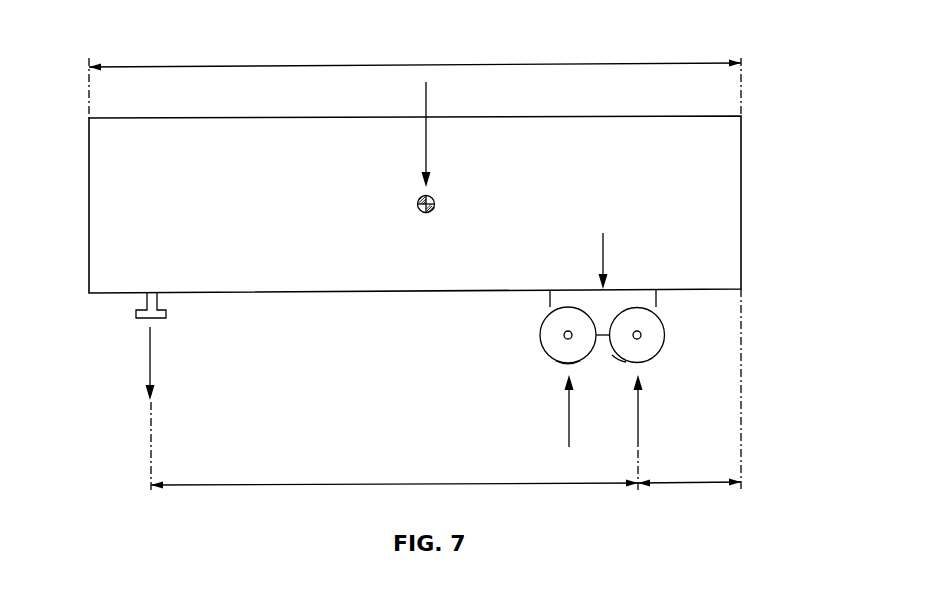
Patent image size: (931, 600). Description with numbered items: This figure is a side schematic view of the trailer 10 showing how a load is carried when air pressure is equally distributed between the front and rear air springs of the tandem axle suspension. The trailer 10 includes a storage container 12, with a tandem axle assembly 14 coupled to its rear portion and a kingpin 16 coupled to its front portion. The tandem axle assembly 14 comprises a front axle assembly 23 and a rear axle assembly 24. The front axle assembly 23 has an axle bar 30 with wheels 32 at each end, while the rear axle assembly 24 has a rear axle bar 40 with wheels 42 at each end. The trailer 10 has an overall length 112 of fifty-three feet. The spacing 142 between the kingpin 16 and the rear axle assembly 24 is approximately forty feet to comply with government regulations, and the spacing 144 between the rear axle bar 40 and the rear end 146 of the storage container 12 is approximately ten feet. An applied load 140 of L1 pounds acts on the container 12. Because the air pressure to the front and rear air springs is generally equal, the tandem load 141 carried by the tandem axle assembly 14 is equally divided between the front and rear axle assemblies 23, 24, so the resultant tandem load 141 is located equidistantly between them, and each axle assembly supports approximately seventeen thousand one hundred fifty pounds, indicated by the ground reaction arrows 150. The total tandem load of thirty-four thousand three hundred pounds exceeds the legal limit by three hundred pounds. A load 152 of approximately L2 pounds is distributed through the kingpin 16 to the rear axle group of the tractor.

The trailer 10 is at (88, 36).
The storage container 12 is at (678, 127).
The tandem axle assembly 14 is at (520, 340).
The kingpin 16 is at (162, 313).
The front axle assembly 23 is at (554, 369).
The rear axle assembly 24 is at (614, 363).
The axle bar 30 is at (564, 331).
The wheels 32 is at (553, 352).
The rear axle bar 40 is at (643, 333).
The wheels 42 is at (657, 346).
The overall length 112 is at (598, 65).
The applied load 140 is at (428, 98).
The tandem load 141 is at (606, 254).
The spacing 142 is at (322, 485).
The spacing 144 is at (705, 483).
The rear end 146 is at (743, 256).
The wheel reaction forces 150 is at (569, 433).
The load 152 is at (149, 343).